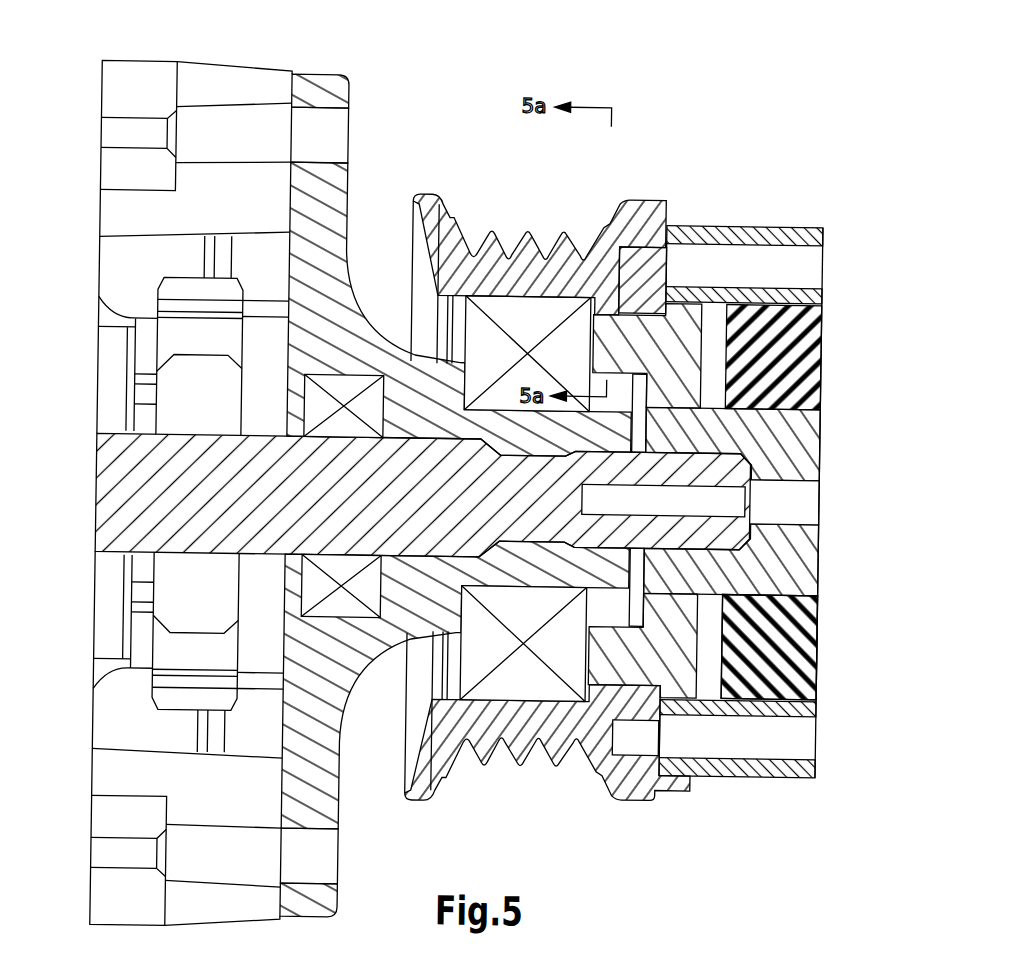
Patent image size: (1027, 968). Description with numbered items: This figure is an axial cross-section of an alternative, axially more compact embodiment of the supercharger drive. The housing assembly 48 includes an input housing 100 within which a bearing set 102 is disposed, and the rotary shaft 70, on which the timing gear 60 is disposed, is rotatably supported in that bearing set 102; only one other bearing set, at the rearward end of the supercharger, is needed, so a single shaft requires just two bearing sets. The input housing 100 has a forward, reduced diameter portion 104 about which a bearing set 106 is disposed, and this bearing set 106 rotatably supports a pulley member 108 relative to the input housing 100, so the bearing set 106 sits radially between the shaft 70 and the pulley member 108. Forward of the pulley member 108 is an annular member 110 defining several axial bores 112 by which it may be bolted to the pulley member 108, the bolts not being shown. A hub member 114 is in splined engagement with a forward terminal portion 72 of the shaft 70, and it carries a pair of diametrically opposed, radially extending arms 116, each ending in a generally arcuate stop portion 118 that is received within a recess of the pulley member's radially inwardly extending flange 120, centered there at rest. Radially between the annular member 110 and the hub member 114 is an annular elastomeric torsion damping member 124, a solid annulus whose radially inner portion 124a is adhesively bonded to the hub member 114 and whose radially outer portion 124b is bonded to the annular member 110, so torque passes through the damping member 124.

The housing assembly 48 is at (228, 48).
The timing gear 60 is at (168, 701).
The rotary shaft 70 is at (139, 501).
The forward terminal portion 72 is at (733, 464).
The input housing 100 is at (325, 181).
The bearing set 102 is at (351, 426).
The reduced diameter portion 104 is at (520, 421).
The bearing set 106 is at (531, 742).
The pulley member 108 is at (528, 210).
The annular member 110 is at (786, 222).
The axial bores 112 is at (787, 253).
The hub member 114 is at (795, 553).
The radially extending arms 116 is at (686, 362).
The arcuate stop portion 118 is at (634, 301).
The radially inwardly extending flange 120 is at (627, 426).
The torsion damping member 124 is at (788, 355).
The radially inner portion 124a is at (794, 605).
The radially outer portion 124b is at (776, 688).